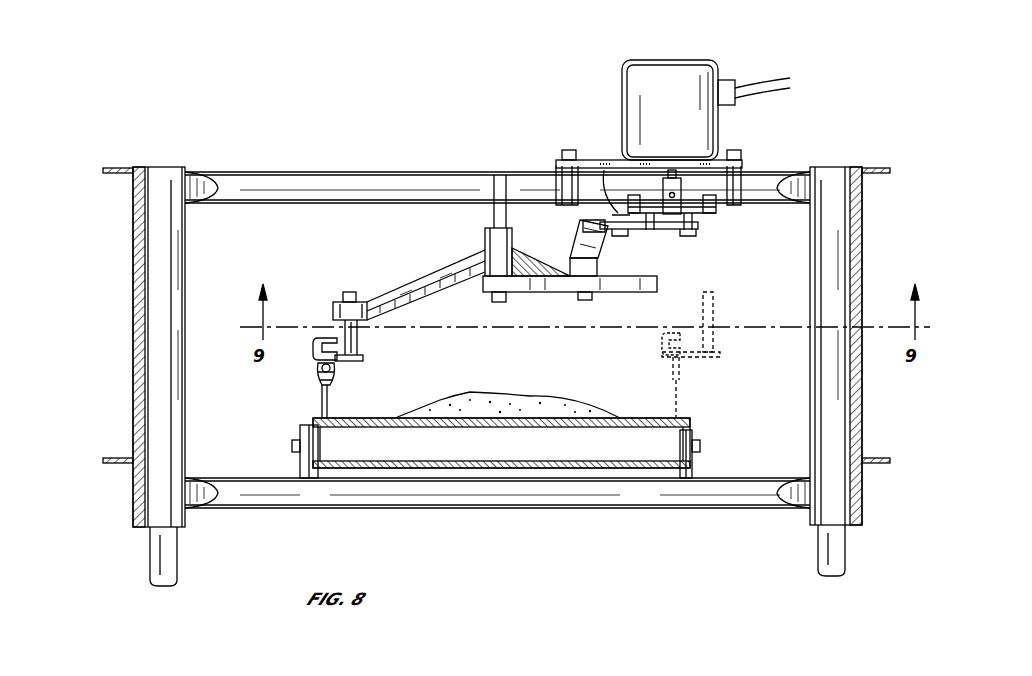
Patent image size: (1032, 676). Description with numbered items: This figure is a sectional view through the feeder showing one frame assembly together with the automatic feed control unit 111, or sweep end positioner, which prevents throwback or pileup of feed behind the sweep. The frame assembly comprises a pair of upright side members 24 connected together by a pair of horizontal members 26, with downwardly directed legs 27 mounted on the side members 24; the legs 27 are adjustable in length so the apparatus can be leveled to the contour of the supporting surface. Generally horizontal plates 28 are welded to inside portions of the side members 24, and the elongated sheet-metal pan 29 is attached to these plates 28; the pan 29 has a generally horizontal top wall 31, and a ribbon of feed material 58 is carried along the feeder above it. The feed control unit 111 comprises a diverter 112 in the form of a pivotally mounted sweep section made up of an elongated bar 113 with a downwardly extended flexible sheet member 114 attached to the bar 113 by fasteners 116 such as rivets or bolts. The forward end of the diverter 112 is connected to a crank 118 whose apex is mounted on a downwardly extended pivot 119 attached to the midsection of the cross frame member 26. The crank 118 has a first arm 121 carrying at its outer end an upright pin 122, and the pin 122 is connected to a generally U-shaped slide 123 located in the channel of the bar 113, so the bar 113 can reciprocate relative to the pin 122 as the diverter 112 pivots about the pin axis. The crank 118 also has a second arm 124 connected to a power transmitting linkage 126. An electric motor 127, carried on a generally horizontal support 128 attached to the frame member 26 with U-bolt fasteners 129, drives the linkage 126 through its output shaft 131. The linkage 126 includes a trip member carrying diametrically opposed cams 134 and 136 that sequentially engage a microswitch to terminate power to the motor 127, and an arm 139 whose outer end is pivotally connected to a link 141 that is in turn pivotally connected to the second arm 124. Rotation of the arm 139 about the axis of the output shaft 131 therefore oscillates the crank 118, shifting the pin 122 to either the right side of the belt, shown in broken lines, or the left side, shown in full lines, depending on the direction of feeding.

The upright side member 24 is at (172, 175).
The horizontal member 26 is at (342, 182).
The leg 27 is at (170, 558).
The horizontal plate 28 is at (300, 465).
The pan 29 is at (633, 440).
The top wall 31 is at (592, 431).
The material 58 is at (452, 395).
The feed control unit 111 is at (676, 83).
The diverter 112 is at (308, 372).
The bar 113 is at (315, 348).
The flexible sheet member 114 is at (329, 394).
The fastener 116 is at (334, 372).
The crank 118 is at (448, 262).
The pivot 119 is at (497, 304).
The first arm 121 is at (398, 292).
The pin 122 is at (350, 292).
The slide 123 is at (320, 380).
The second arm 124 is at (541, 294).
The power transmitting linkage 126 is at (712, 232).
The motor 127 is at (684, 60).
The support 128 is at (557, 163).
The fastener 129 is at (568, 150).
The output shaft 131 is at (665, 180).
The cam 134 is at (605, 170).
The cam 136 is at (698, 224).
The arm 139 is at (614, 226).
The link 141 is at (580, 226).